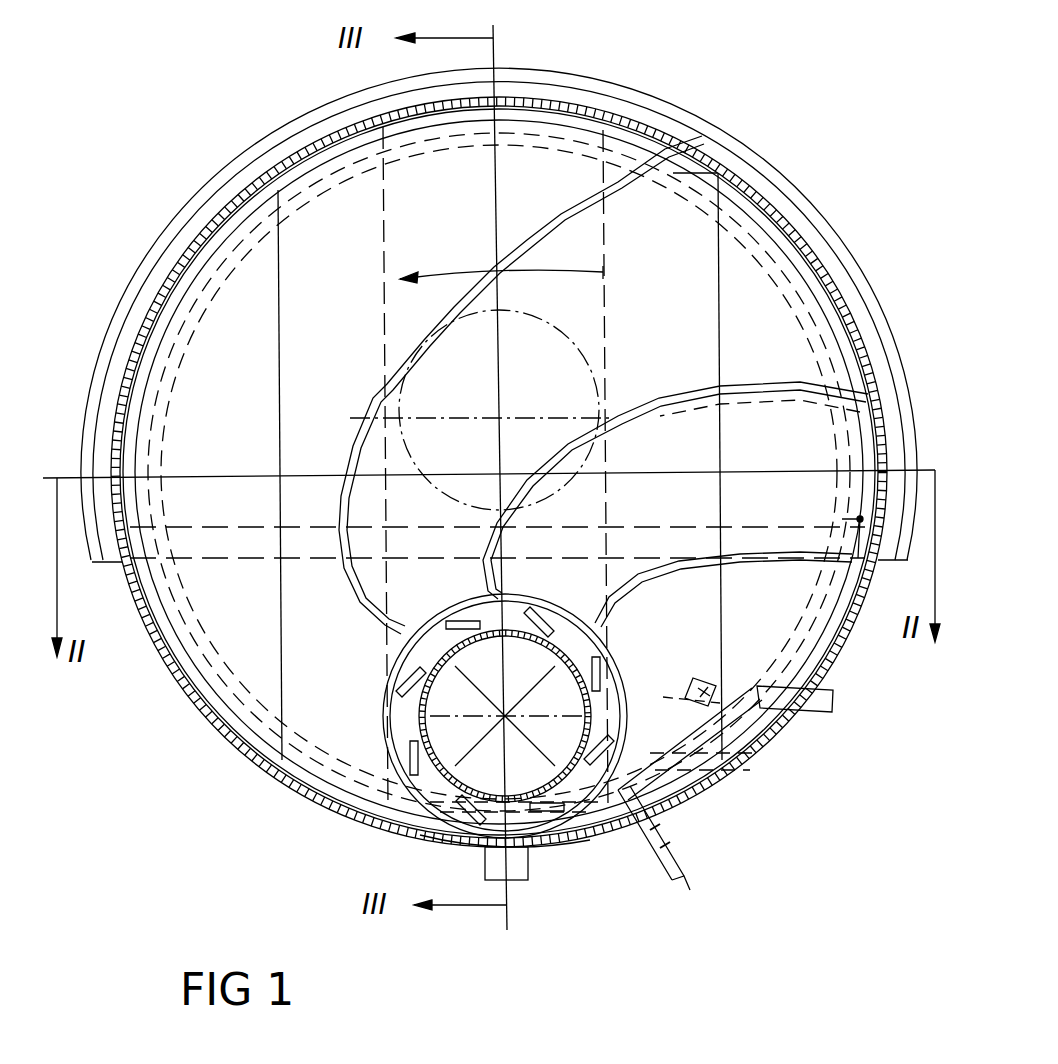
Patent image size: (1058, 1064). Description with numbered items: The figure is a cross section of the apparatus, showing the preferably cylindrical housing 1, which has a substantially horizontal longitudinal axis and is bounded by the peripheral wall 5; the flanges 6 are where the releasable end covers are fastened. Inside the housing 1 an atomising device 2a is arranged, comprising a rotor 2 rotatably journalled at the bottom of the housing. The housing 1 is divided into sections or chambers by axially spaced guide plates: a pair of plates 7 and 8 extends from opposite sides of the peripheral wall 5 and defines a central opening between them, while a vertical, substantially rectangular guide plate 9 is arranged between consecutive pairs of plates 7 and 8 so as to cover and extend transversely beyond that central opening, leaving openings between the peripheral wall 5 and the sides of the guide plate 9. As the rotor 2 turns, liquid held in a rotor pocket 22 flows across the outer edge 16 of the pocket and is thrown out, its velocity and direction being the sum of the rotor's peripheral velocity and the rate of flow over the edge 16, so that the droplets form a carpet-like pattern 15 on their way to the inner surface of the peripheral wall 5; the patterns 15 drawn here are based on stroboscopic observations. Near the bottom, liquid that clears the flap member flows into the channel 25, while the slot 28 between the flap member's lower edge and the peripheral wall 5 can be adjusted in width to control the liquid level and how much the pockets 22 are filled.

The housing 1 is at (740, 132).
The peripheral wall 5 is at (747, 187).
The flange 6 is at (815, 222).
The guide plate 7 is at (245, 475).
The guide plate 8 is at (675, 467).
The vertical guide plate 9 is at (509, 466).
The carpet-like pattern 15 is at (530, 245).
The outer edge 16 is at (588, 643).
The rotor pocket 22 is at (615, 663).
The rotor 2 is at (410, 672).
The channel 25 is at (717, 747).
The atomising device 2a is at (667, 813).
The slot 28 is at (575, 845).